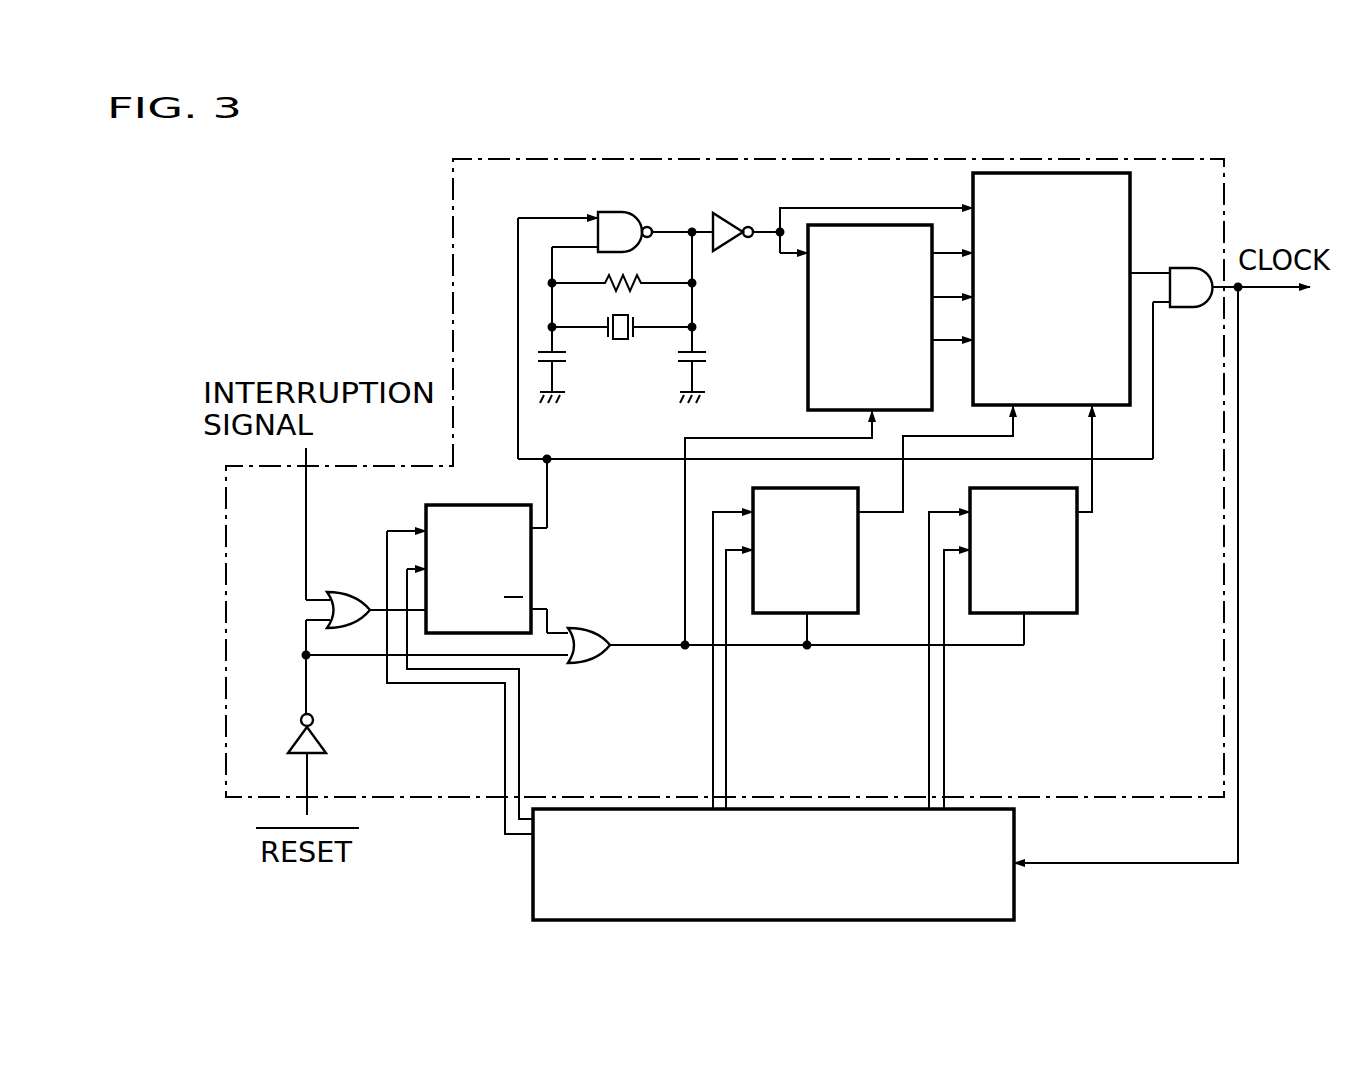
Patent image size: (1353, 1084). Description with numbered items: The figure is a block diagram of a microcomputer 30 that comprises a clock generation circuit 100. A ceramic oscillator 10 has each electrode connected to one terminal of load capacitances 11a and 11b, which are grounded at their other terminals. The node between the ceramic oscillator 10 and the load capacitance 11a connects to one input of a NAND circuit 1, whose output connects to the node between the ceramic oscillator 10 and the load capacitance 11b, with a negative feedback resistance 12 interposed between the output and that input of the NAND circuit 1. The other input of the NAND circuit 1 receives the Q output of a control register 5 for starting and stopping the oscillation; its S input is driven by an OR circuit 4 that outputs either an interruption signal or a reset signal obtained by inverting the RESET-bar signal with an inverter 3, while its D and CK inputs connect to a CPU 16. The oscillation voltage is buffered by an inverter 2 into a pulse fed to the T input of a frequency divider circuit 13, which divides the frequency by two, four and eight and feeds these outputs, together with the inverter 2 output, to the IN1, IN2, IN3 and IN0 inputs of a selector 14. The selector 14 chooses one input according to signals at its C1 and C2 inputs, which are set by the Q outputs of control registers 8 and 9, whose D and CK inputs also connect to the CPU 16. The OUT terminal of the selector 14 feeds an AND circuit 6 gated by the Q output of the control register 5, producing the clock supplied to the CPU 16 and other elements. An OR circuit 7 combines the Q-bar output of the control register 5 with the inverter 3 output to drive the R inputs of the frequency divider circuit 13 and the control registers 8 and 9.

The NAND circuit 1 is at (638, 222).
The inverter 2 is at (735, 245).
The inverter 3 is at (292, 737).
The OR circuit 4 is at (350, 592).
The control register 5 is at (500, 505).
The AND circuit 6 is at (1191, 307).
The OR circuit 7 is at (589, 628).
The control register 8 is at (860, 558).
The control register 9 is at (1079, 558).
The ceramic oscillator 10 is at (607, 320).
The load capacitance 11a is at (574, 364).
The load capacitance 11b is at (717, 364).
The negative feedback resistance 12 is at (636, 278).
The frequency divider circuit 13 is at (808, 323).
The selector 14 is at (1130, 190).
The CPU 16 is at (1014, 841).
The microcomputer 30 is at (383, 290).
The clock generation circuit 100 is at (452, 226).